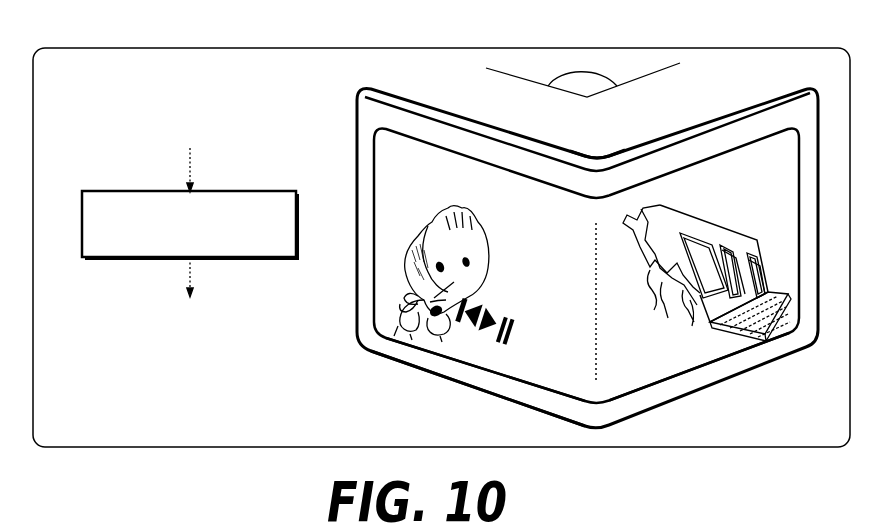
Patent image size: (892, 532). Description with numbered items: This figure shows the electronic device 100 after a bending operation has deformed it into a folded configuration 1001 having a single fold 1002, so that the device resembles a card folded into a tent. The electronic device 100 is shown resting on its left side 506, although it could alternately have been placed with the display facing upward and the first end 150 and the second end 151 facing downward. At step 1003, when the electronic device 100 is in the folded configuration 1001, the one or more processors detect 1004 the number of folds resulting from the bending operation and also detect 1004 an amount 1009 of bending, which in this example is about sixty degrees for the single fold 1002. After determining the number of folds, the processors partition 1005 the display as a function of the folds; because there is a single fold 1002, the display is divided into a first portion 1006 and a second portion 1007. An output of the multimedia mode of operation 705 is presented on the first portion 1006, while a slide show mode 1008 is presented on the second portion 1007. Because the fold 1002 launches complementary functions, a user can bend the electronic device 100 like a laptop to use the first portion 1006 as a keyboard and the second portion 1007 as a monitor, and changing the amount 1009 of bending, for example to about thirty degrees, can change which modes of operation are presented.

The electronic device 100 is at (336, 346).
The first end 150 is at (334, 266).
The second end 151 is at (820, 365).
The left side 506 is at (441, 394).
The multimedia mode of operation 705 is at (407, 234).
The folded configuration 1001 is at (694, 93).
The single fold 1002 is at (598, 146).
The step 1003 is at (112, 190).
The detect 1004 is at (157, 199).
The partition 1005 is at (597, 320).
The first portion 1006 is at (532, 364).
The second portion 1007 is at (681, 367).
The slide show mode 1008 is at (709, 201).
The amount 1009 is at (574, 73).